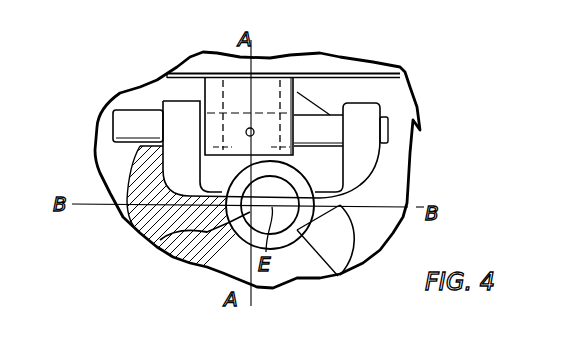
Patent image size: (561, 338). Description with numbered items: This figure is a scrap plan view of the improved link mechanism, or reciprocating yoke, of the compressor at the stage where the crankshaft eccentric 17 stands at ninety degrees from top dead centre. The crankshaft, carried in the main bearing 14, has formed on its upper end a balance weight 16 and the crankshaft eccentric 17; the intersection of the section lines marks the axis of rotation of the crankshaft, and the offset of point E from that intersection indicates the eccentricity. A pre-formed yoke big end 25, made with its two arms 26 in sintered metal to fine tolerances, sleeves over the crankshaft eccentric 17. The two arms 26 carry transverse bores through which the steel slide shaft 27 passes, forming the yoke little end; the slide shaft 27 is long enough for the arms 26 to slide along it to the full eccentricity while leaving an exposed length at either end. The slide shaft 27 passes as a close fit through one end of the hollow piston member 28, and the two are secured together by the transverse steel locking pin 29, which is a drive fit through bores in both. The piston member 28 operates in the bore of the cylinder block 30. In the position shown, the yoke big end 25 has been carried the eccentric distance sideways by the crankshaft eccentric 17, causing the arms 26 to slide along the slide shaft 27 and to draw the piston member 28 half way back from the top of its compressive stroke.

The main bearing 14 is at (358, 226).
The balance weight 16 is at (140, 186).
The crankshaft eccentric 17 is at (167, 243).
The yoke big end 25 is at (322, 262).
The arms 26 is at (163, 110).
The slide shaft 27 is at (130, 130).
The piston member 28 is at (268, 82).
The locking pin 29 is at (246, 129).
The cylinder block 30 is at (208, 55).